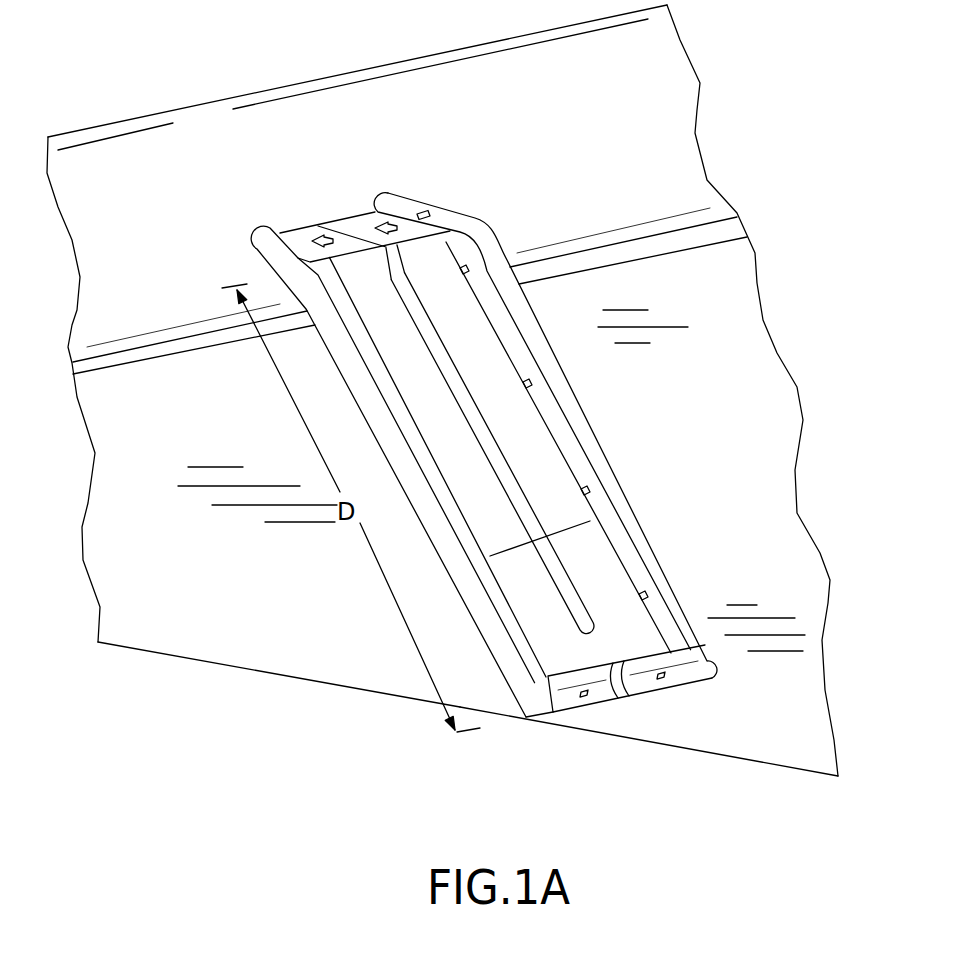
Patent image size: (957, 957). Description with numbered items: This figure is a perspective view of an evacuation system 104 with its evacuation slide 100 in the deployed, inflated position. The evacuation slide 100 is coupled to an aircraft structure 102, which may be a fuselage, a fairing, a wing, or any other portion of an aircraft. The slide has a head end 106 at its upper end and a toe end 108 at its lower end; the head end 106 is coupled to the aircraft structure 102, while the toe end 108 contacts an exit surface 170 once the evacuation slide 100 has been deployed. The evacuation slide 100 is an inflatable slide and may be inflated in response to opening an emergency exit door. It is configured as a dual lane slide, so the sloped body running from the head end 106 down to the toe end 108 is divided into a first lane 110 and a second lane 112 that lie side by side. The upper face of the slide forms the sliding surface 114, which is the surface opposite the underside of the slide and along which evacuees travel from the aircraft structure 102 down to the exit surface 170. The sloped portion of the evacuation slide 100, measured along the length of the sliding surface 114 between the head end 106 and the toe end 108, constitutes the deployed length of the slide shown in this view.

The evacuation slide 100 is at (511, 501).
The aircraft structure 102 is at (547, 136).
The evacuation system 104 is at (707, 272).
The head end 106 is at (318, 160).
The toe end 108 is at (635, 713).
The first lane 110 is at (565, 658).
The second lane 112 is at (657, 632).
The sliding surface 114 is at (463, 453).
The exit surface 170 is at (275, 667).